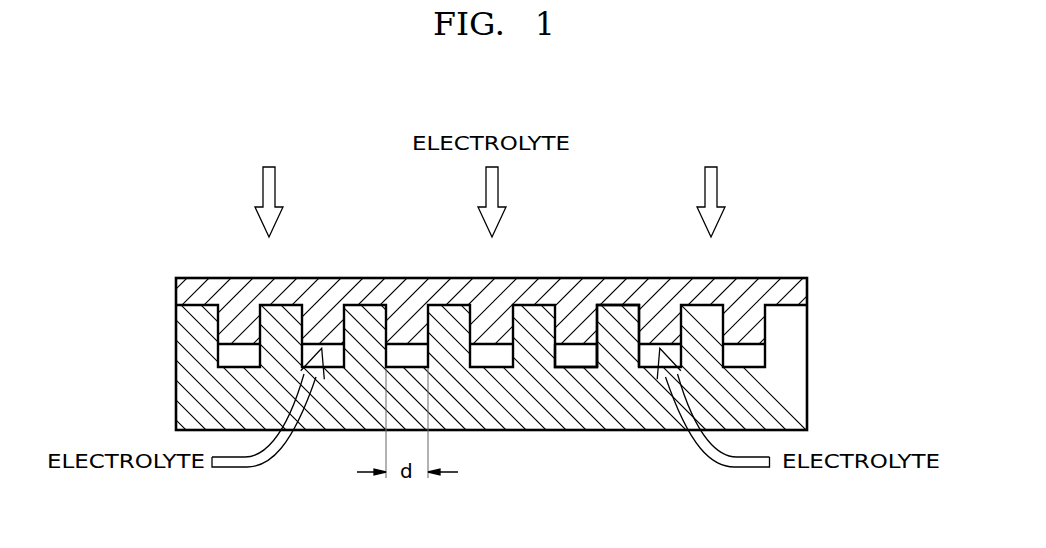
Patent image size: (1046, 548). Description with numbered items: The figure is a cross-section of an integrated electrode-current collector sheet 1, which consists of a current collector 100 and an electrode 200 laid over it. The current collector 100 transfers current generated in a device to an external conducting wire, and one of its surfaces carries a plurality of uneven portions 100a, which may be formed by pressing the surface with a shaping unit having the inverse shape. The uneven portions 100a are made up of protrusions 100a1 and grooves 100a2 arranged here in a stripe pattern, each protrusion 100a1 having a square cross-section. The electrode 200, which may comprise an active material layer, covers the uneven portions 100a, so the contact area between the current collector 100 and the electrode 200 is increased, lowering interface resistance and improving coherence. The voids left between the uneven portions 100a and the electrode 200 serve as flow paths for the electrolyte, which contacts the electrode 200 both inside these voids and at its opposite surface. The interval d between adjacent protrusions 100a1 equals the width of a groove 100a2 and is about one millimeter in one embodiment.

The electrode-current collector sheet 1 is at (776, 211).
The current collector 100 is at (809, 403).
The electrode 200 is at (809, 294).
The uneven portions 100a is at (657, 230).
The protrusion 100a1 is at (615, 310).
The groove 100a2 is at (577, 357).